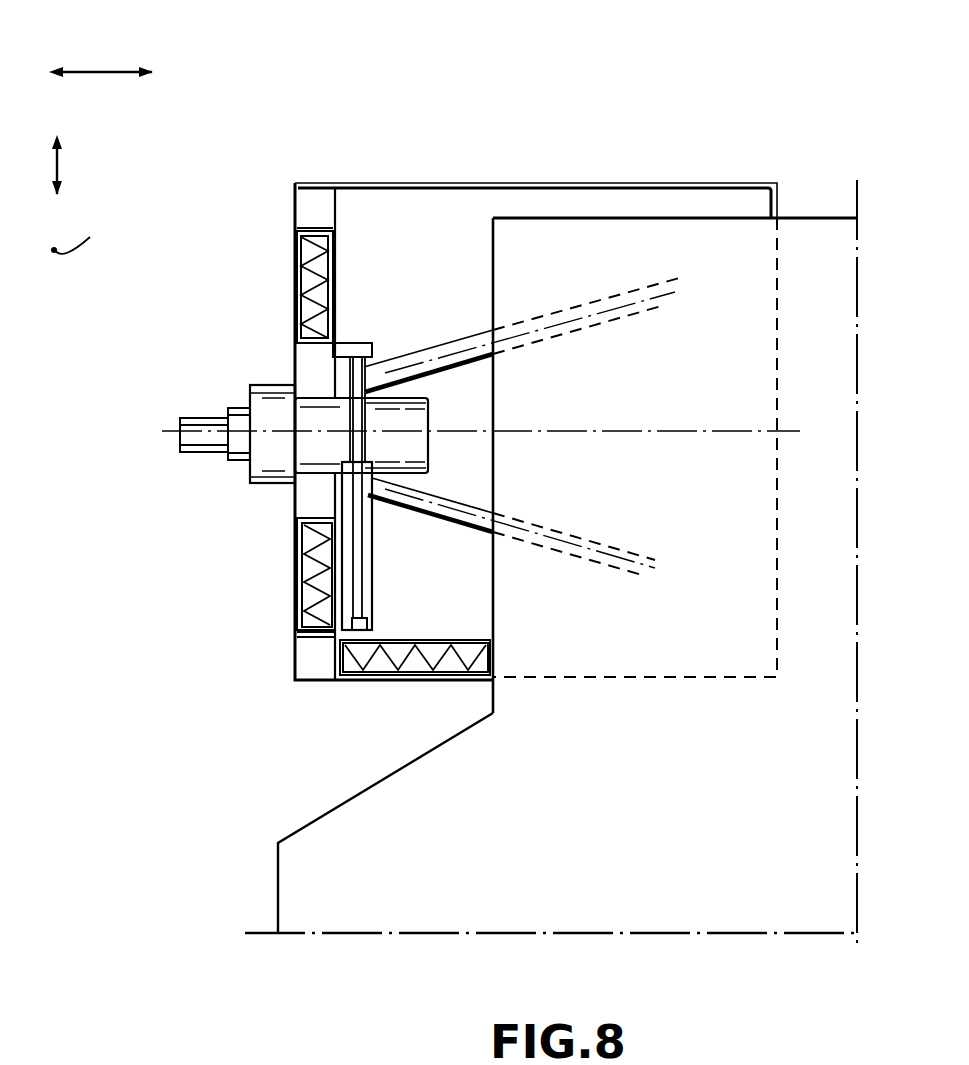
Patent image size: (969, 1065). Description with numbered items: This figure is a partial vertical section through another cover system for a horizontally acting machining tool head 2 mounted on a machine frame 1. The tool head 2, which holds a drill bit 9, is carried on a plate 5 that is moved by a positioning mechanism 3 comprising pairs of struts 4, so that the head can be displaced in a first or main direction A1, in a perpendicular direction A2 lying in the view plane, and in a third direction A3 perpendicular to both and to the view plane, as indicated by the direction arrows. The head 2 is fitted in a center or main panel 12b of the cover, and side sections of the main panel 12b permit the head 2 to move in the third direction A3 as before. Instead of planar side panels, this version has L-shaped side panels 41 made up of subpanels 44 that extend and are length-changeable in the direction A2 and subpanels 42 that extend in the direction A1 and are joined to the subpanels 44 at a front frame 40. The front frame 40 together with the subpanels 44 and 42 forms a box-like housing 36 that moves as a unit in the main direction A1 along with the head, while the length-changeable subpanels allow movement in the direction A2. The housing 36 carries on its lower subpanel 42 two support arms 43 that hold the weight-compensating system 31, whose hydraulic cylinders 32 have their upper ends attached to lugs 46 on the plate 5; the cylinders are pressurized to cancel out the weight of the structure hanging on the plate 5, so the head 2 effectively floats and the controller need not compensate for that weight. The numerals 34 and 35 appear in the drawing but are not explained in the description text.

The machine frame 1 is at (821, 250).
The tool head 2 is at (262, 455).
The positioning mechanism 3 is at (441, 322).
The struts 4 is at (590, 303).
The plate 5 is at (300, 364).
The drill bit 9 is at (201, 420).
The main panel 12b is at (295, 512).
The weight-compensating system 31 is at (390, 549).
The hydraulic cylinders 32 is at (353, 592).
The lower arm 34 is at (600, 547).
The frame leg 35 is at (295, 903).
The box-like housing 36 is at (709, 186).
The front frame 40 is at (306, 201).
The L-shaped side panels 41 is at (285, 258).
The subpanels 42 is at (330, 262).
The support arms 43 is at (343, 623).
The subpanels 44 is at (297, 610).
The lugs 46 is at (362, 350).
The main direction A1 is at (107, 72).
The perpendicular direction A2 is at (60, 171).
The third direction A3 is at (87, 231).